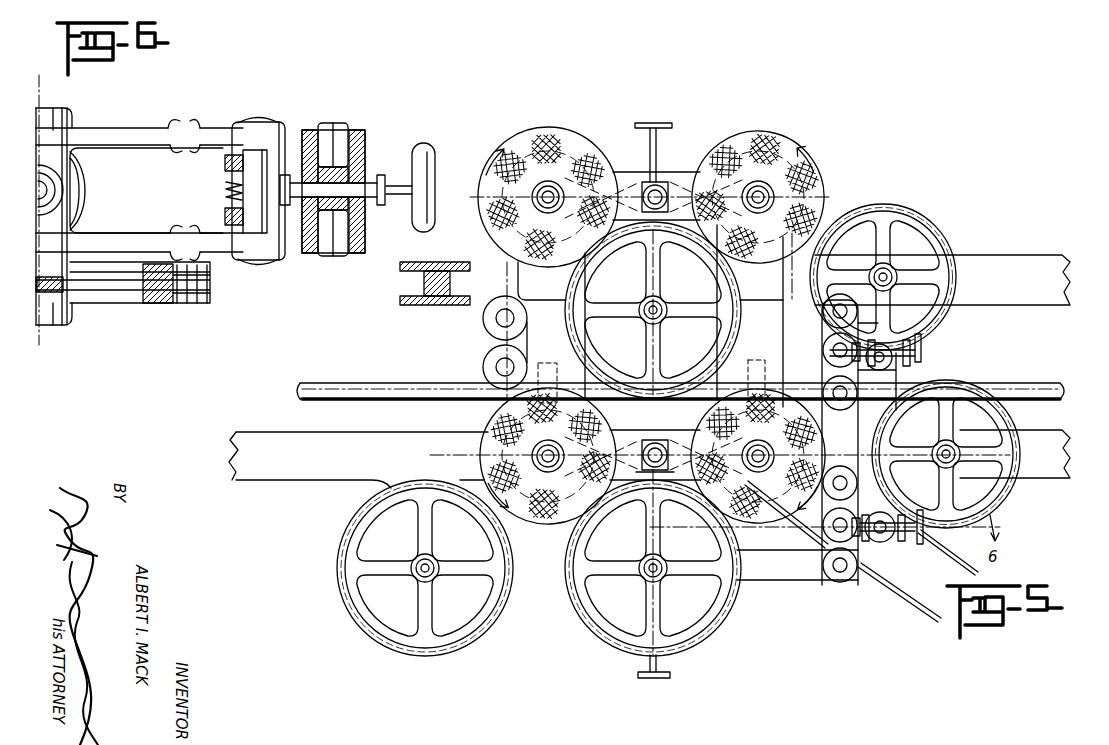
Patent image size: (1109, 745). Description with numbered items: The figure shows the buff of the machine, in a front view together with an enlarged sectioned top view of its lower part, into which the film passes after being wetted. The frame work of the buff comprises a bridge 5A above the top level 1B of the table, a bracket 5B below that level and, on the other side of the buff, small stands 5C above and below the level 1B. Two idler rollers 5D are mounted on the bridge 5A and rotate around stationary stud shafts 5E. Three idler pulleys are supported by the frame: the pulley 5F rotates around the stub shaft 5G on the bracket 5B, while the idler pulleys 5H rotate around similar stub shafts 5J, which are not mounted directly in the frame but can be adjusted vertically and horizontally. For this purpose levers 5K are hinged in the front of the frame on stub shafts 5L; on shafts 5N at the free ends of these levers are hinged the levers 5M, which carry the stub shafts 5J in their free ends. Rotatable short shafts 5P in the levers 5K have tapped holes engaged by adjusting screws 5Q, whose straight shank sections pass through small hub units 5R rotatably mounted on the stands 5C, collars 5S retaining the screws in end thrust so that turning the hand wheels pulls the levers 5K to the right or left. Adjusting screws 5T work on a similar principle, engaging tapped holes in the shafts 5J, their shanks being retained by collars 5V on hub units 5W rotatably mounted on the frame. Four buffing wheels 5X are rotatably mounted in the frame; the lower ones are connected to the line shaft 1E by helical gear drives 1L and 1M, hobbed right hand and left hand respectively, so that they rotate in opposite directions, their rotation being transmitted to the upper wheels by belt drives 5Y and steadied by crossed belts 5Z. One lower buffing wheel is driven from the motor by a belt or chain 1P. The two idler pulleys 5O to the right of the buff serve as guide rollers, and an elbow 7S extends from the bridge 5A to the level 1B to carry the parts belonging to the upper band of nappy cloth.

In FIG. 5, the top level of the table 1B is at (358, 460).
In FIG. 5, the line shaft 1E is at (382, 385).
In FIG. 5, the helical gear drive 1L is at (546, 362).
In FIG. 5, the helical gear drive 1M is at (756, 360).
In FIG. 5, the belt or chain 1P is at (906, 603).
In FIG. 5, the elbow 7S is at (942, 366).
In FIG. 5, the bridge 5A is at (688, 405).
In FIG. 5, the bracket 5B is at (410, 522).
In FIG. 6, the small stands 5C is at (311, 130).
In FIG. 5, the small stands 5C is at (896, 371).
In FIG. 5, the idler rollers 5D is at (496, 320).
In FIG. 5, the stationary stud shafts 5E is at (500, 356).
In FIG. 6, the idler pulley 5F is at (119, 300).
In FIG. 5, the idler pulley 5F is at (352, 575).
In FIG. 5, the stub shaft 5G is at (440, 562).
In FIG. 5, the idler pulleys 5H is at (640, 188).
In FIG. 6, the stub shafts 5J is at (49, 114).
In FIG. 5, the stub shafts 5J is at (640, 318).
In FIG. 6, the levers 5K is at (224, 161).
In FIG. 5, the levers 5K is at (572, 136).
In FIG. 5, the stub shafts 5L is at (840, 405).
In FIG. 6, the levers 5M is at (181, 127).
In FIG. 5, the levers 5M is at (691, 302).
In FIG. 6, the shafts 5N is at (258, 118).
In FIG. 5, the shafts 5N is at (850, 312).
In FIG. 6, the idler pulleys 5O is at (445, 273).
In FIG. 5, the idler pulleys 5O is at (940, 236).
In FIG. 6, the rotatable short shafts 5P is at (248, 236).
In FIG. 5, the rotatable short shafts 5P is at (838, 345).
In FIG. 6, the adjusting screws 5Q is at (226, 189).
In FIG. 5, the adjusting screws 5Q is at (836, 353).
In FIG. 6, the hub units 5R is at (352, 178).
In FIG. 5, the hub units 5R is at (921, 358).
In FIG. 6, the collars 5S is at (289, 208).
In FIG. 5, the collars 5S is at (932, 349).
In FIG. 6, the adjusting screws 5T is at (82, 186).
In FIG. 5, the adjusting screws 5T is at (658, 142).
In FIG. 5, the collars 5V is at (662, 184).
In FIG. 5, the hub units 5W is at (662, 440).
In FIG. 5, the buffing wheels 5X is at (772, 150).
In FIG. 5, the belt drives 5Y is at (508, 271).
In FIG. 5, the crossed belts 5Z is at (640, 184).